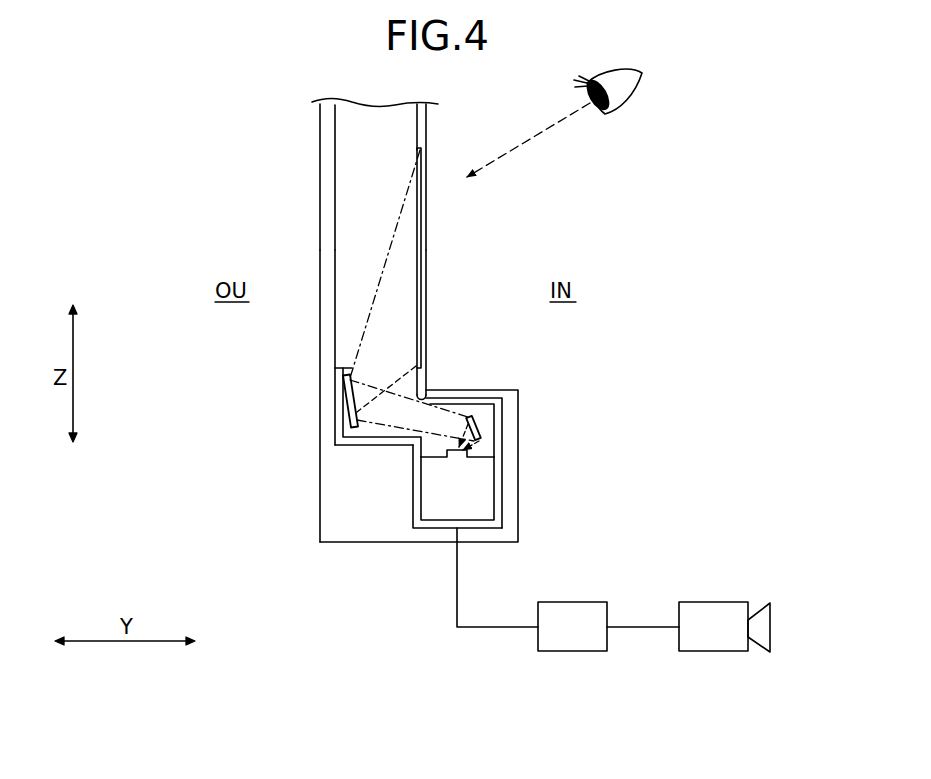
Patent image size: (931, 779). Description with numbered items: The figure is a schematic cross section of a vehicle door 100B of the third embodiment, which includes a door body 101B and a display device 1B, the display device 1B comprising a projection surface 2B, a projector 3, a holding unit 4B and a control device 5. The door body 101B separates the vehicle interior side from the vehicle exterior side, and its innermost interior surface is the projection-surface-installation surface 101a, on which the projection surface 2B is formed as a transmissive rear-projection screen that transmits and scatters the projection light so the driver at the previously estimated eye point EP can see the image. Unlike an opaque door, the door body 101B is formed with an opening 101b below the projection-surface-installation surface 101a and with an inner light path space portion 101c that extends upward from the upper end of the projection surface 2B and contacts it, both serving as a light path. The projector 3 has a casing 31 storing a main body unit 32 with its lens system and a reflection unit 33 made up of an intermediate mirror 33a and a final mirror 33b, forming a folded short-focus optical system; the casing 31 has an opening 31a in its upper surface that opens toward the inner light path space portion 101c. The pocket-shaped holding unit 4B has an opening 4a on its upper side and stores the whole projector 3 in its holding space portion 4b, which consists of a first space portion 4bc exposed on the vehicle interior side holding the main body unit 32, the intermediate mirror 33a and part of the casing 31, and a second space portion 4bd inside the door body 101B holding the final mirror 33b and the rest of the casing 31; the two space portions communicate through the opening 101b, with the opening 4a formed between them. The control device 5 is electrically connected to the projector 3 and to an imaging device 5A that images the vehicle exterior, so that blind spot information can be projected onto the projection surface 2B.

The projection-surface-installation surface 101a is at (428, 128).
The opening 101b is at (431, 394).
The inner light path space portion 101c is at (352, 250).
The projection surface 2B is at (430, 241).
The opening 31a is at (356, 369).
The casing 31 is at (497, 467).
The main body unit 32 is at (470, 500).
The reflection unit 33 is at (448, 310).
The intermediate mirror 33a is at (484, 432).
The final mirror 33b is at (358, 411).
The projector 3 is at (464, 388).
The opening 4a is at (495, 392).
The holding space portion 4b is at (372, 444).
The second space portion 4bd is at (340, 433).
The first space portion 4bc is at (437, 450).
The holding unit 4B is at (530, 544).
The control device 5 is at (608, 612).
The imaging device 5A is at (771, 613).
The eye point EP is at (632, 98).
The door body 101B is at (320, 489).
The display device 1B is at (411, 551).
The vehicle door 100B is at (418, 630).